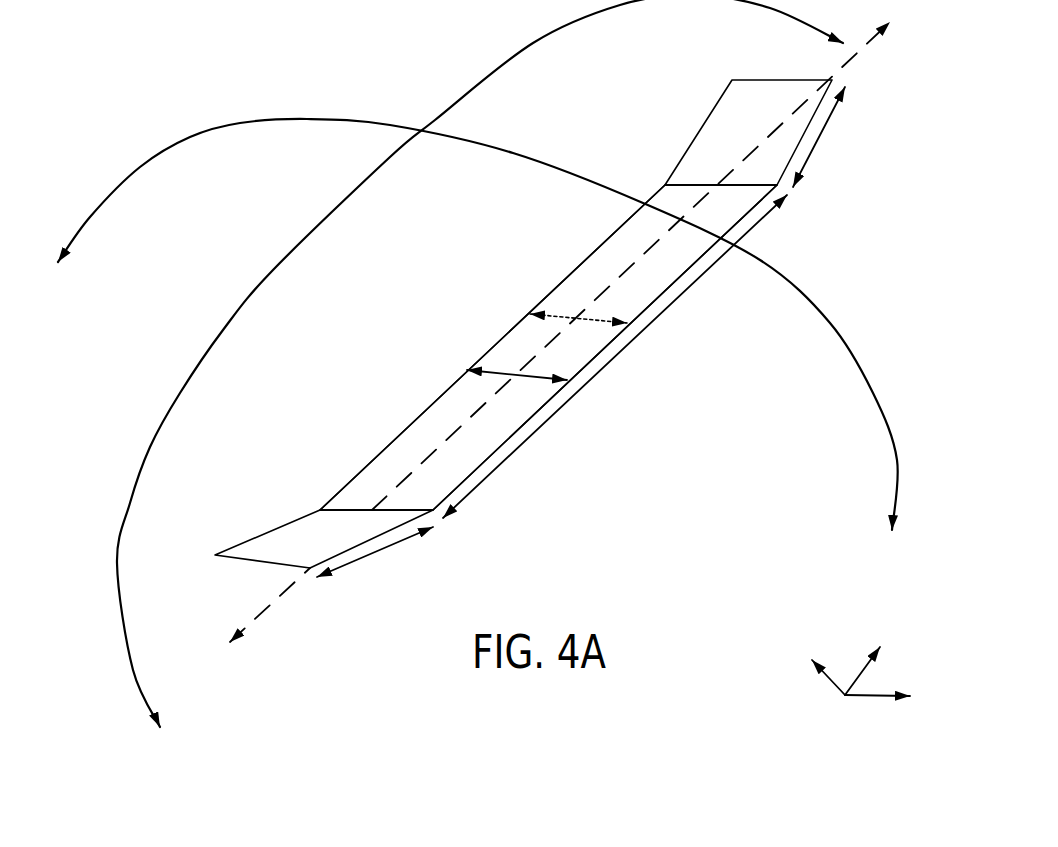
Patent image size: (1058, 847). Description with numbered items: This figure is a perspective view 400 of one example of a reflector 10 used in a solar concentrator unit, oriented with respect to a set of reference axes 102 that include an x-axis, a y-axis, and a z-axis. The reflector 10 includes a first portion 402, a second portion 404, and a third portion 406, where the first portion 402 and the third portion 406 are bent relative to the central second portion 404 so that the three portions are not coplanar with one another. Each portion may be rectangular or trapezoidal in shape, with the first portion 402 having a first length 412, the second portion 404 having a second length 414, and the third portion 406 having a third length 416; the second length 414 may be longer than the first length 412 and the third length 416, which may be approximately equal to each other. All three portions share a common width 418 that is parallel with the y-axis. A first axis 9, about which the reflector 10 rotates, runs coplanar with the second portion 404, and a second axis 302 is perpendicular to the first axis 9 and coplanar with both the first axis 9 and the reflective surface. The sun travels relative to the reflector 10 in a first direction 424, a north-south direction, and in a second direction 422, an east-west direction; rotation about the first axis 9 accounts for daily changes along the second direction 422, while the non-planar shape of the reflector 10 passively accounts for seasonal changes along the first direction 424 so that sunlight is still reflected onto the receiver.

The perspective view 400 is at (148, 47).
The first portion 402 is at (300, 532).
The second portion 404 is at (612, 253).
The third portion 406 is at (713, 105).
The reflector 10 is at (487, 332).
The first length 412 is at (357, 560).
The second length 414 is at (496, 470).
The third length 416 is at (812, 150).
The common width 418 is at (530, 378).
The second axis 302 is at (600, 322).
The first axis 9 is at (277, 596).
The second direction 422 is at (832, 327).
The first direction 424 is at (472, 88).
The reference axes 102 is at (892, 625).